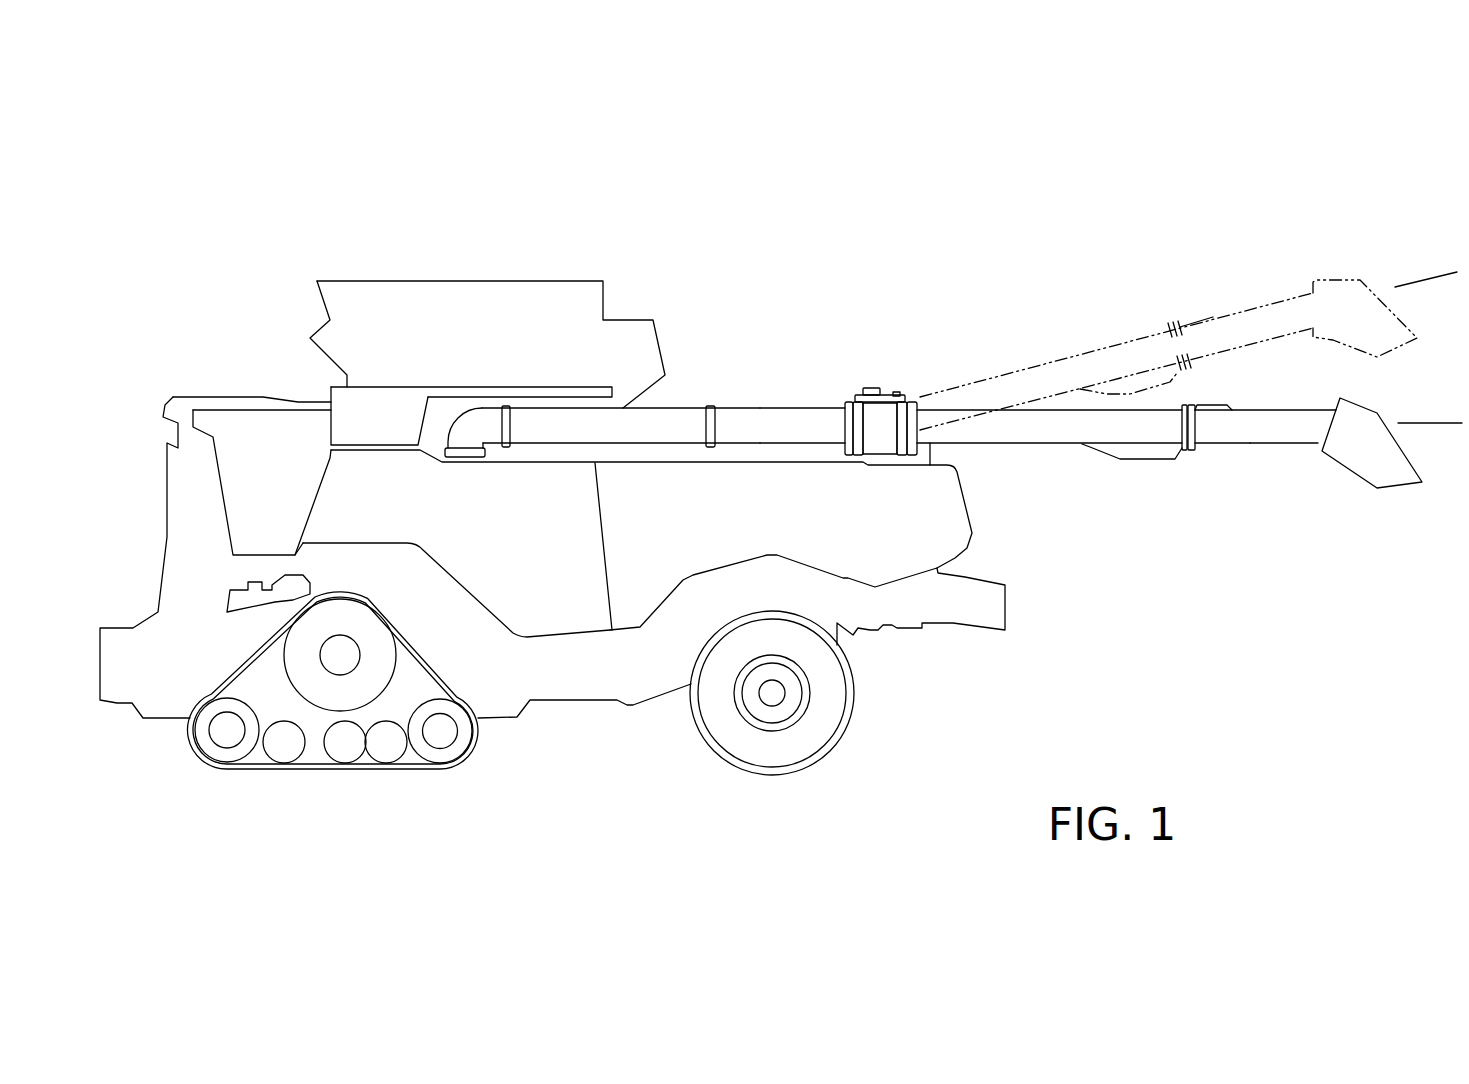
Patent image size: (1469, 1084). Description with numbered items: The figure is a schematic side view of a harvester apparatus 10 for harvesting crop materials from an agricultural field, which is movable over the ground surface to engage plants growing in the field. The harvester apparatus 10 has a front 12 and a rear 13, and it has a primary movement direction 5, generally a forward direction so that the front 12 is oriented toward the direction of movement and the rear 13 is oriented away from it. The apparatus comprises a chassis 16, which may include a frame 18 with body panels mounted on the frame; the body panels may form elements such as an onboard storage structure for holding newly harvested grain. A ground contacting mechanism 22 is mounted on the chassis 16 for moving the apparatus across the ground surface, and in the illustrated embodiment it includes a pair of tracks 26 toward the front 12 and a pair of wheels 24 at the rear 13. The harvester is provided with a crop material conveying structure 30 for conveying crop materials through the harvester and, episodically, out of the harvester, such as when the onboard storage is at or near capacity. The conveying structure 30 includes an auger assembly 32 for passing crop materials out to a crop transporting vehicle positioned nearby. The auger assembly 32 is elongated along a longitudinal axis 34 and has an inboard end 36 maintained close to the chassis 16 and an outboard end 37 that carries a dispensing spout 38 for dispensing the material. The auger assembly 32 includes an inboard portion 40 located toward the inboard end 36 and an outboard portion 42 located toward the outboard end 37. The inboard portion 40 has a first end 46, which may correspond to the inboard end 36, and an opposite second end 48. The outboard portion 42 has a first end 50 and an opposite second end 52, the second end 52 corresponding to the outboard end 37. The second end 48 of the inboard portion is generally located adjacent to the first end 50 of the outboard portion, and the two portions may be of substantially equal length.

The primary movement direction 5 is at (1023, 607).
The harvester apparatus 10 is at (277, 192).
The front 12 is at (112, 578).
The rear 13 is at (995, 660).
The chassis 16 is at (548, 745).
The frame 18 is at (593, 700).
The ground contacting mechanism 22 is at (312, 797).
The wheels 24 is at (832, 748).
The tracks 26 is at (400, 770).
The crop material conveying structure 30 is at (820, 327).
The auger assembly 32 is at (1010, 478).
The longitudinal axis 34 is at (1417, 423).
The inboard end 36 is at (452, 407).
The outboard end 37 is at (1371, 495).
The dispensing spout 38 is at (1405, 485).
The inboard portion 40 is at (673, 408).
The outboard portion 42 is at (1248, 410).
The first end of the inboard portion 46 is at (523, 418).
The second end of the inboard portion 48 is at (828, 420).
The first end of the outboard portion 50 is at (912, 403).
The second end of the outboard portion 52 is at (1313, 435).